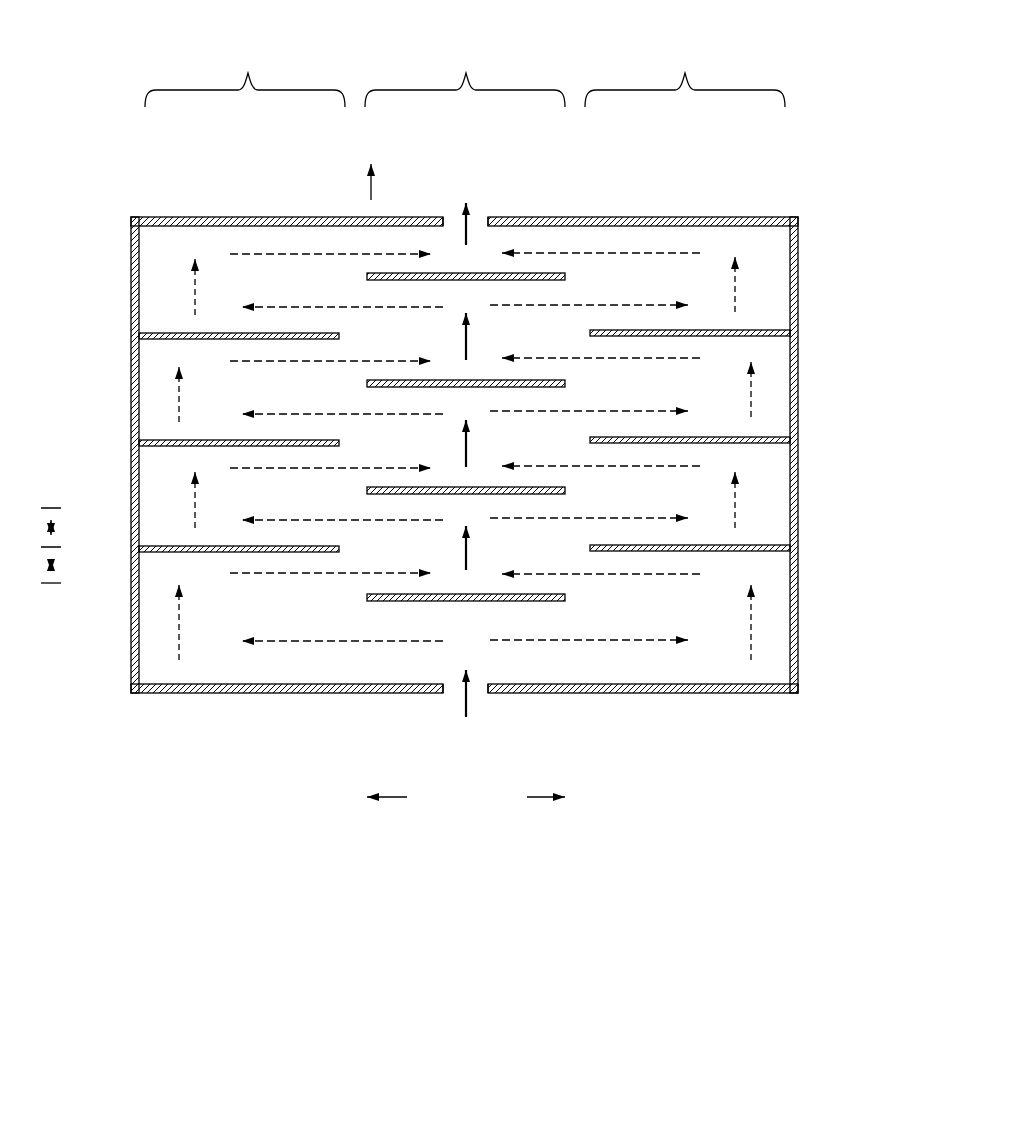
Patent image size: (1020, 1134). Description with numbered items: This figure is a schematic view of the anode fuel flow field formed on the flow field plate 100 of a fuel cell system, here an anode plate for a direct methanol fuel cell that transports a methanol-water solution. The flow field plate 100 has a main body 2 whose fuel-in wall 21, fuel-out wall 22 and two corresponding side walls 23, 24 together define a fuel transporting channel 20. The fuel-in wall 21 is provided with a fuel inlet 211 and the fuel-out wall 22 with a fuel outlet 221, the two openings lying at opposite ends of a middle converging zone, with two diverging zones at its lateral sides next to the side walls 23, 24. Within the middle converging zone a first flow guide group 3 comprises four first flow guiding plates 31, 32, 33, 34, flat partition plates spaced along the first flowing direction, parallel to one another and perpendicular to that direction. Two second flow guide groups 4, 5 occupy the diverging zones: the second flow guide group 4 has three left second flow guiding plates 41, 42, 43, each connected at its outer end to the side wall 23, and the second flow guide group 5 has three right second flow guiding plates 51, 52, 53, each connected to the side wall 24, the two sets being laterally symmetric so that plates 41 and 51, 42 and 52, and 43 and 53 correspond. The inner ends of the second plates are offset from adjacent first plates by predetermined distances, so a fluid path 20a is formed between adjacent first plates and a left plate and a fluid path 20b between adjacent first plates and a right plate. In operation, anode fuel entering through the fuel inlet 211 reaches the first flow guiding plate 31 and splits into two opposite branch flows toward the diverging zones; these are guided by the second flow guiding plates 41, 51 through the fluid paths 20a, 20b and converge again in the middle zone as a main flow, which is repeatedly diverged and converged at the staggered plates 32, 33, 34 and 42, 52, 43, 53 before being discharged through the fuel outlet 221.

The flow field plate 100 is at (810, 92).
The main body 2 is at (798, 232).
The fuel transporting channel 20 is at (602, 243).
The fluid path 20a is at (345, 404).
The fluid path 20b is at (585, 403).
The fuel-in wall 21 is at (733, 694).
The fuel-out wall 22 is at (733, 216).
The side wall 23 is at (131, 268).
The side wall 24 is at (798, 295).
The fuel inlet 211 is at (488, 692).
The fuel outlet 221 is at (485, 217).
The first flow guide group 3 is at (422, 609).
The first flow guiding plate 31 is at (565, 595).
The first flow guiding plate 32 is at (565, 488).
The first flow guiding plate 33 is at (565, 381).
The first flow guiding plate 34 is at (565, 274).
The second flow guide group 4 is at (155, 566).
The left second flow guiding plate 41 is at (132, 551).
The left second flow guiding plate 42 is at (132, 447).
The left second flow guiding plate 43 is at (132, 338).
The second flow guide group 5 is at (777, 566).
The right second flow guiding plate 51 is at (795, 550).
The right second flow guiding plate 52 is at (795, 442).
The right second flow guiding plate 53 is at (795, 335).